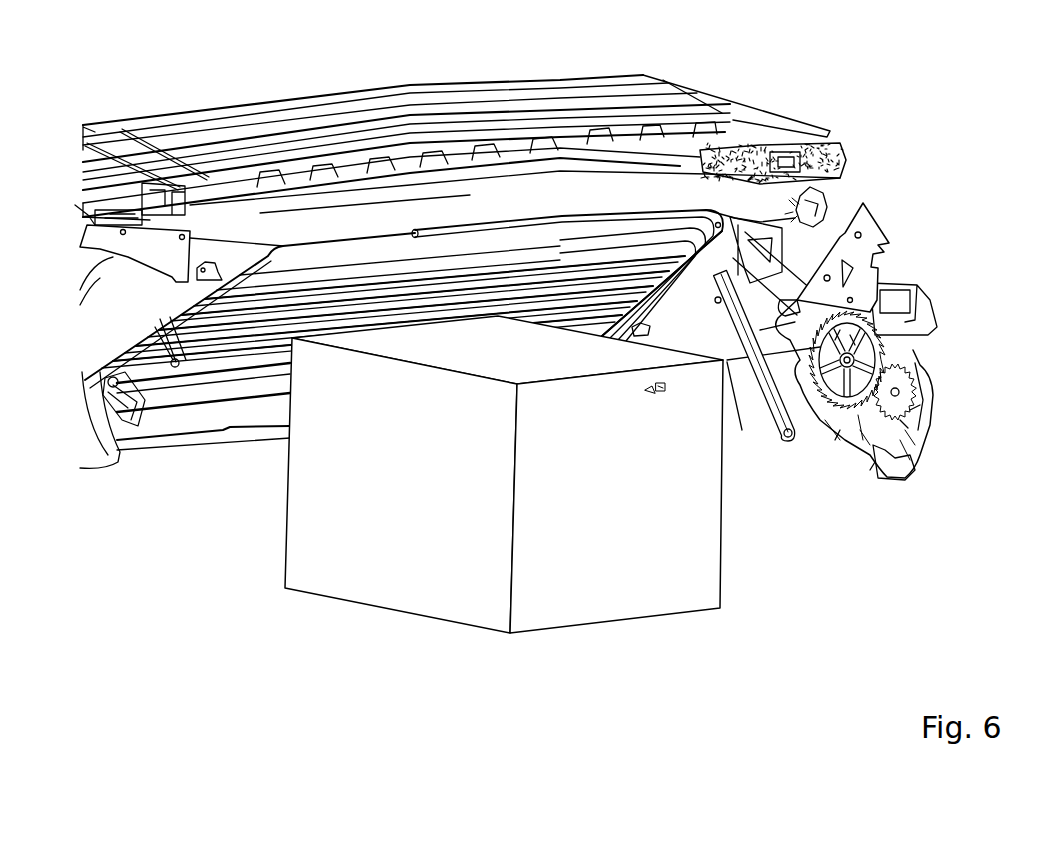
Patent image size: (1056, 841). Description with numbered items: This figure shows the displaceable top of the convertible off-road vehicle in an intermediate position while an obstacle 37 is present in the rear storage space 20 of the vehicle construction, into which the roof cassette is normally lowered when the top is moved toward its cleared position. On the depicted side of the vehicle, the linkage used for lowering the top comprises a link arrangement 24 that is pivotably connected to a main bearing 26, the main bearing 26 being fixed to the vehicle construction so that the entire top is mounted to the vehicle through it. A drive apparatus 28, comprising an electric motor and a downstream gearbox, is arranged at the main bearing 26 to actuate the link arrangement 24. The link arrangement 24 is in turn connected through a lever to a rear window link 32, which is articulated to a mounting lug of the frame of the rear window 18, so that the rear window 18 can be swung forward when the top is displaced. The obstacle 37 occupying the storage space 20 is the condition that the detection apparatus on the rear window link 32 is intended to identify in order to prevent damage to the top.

The rear window 18 is at (230, 338).
The storage space 20 is at (243, 505).
The link arrangement 24 is at (712, 285).
The main bearing 26 is at (868, 232).
The drive apparatus 28 is at (941, 442).
The rear window link 32 is at (770, 410).
The obstacle 37 is at (409, 565).